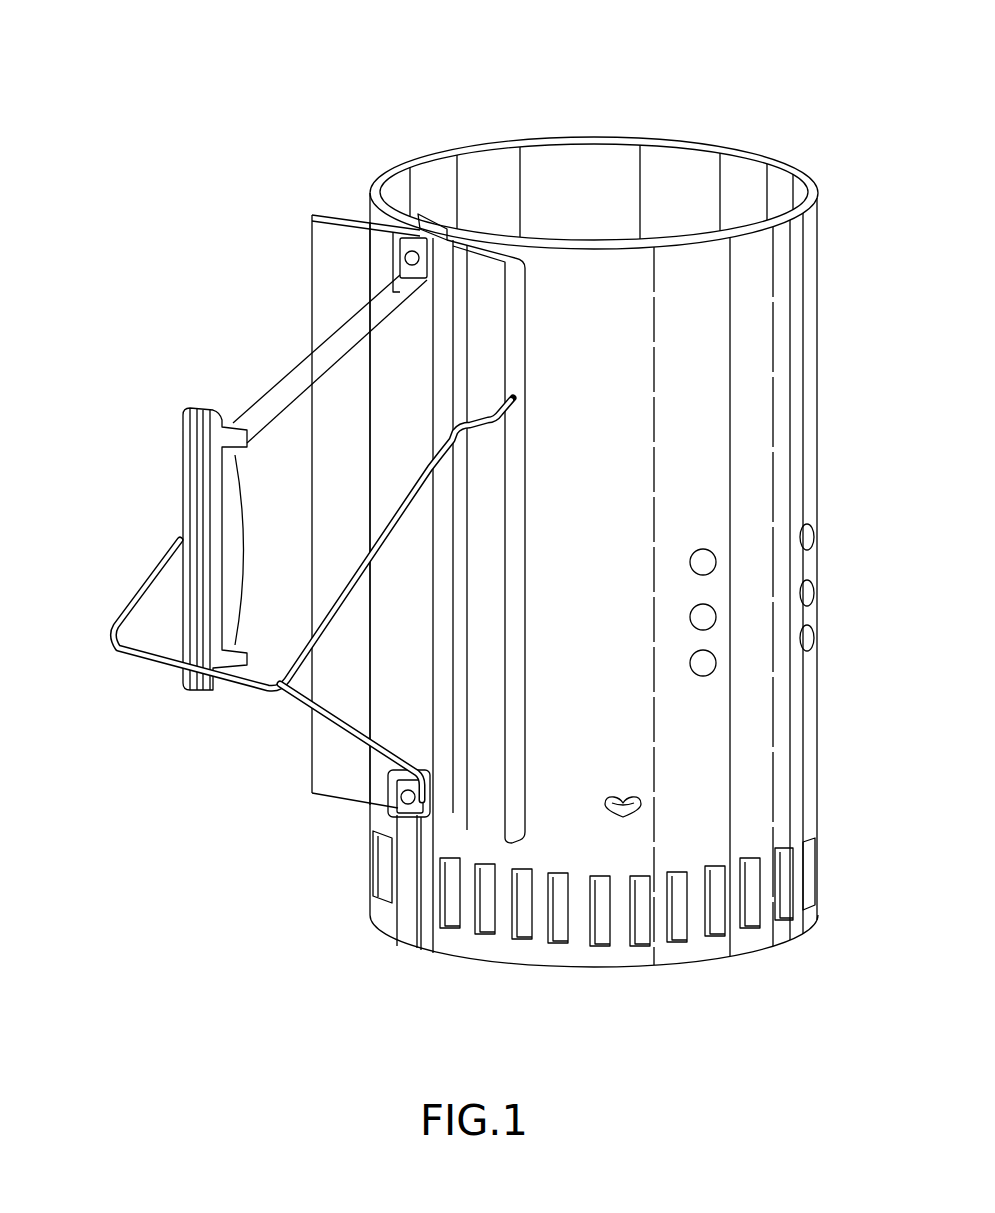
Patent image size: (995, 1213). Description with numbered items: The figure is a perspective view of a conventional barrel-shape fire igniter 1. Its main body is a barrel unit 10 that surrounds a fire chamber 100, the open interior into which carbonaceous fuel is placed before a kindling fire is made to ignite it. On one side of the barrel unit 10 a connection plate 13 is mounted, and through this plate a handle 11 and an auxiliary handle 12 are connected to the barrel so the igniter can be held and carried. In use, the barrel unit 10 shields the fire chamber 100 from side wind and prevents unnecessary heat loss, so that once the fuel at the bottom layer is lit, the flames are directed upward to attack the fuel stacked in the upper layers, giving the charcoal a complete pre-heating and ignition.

The fire igniter 1 is at (350, 155).
The barrel unit 10 is at (740, 150).
The fire chamber 100 is at (581, 183).
The handle 11 is at (263, 405).
The auxiliary handle 12 is at (162, 660).
The connection plate 13 is at (320, 273).